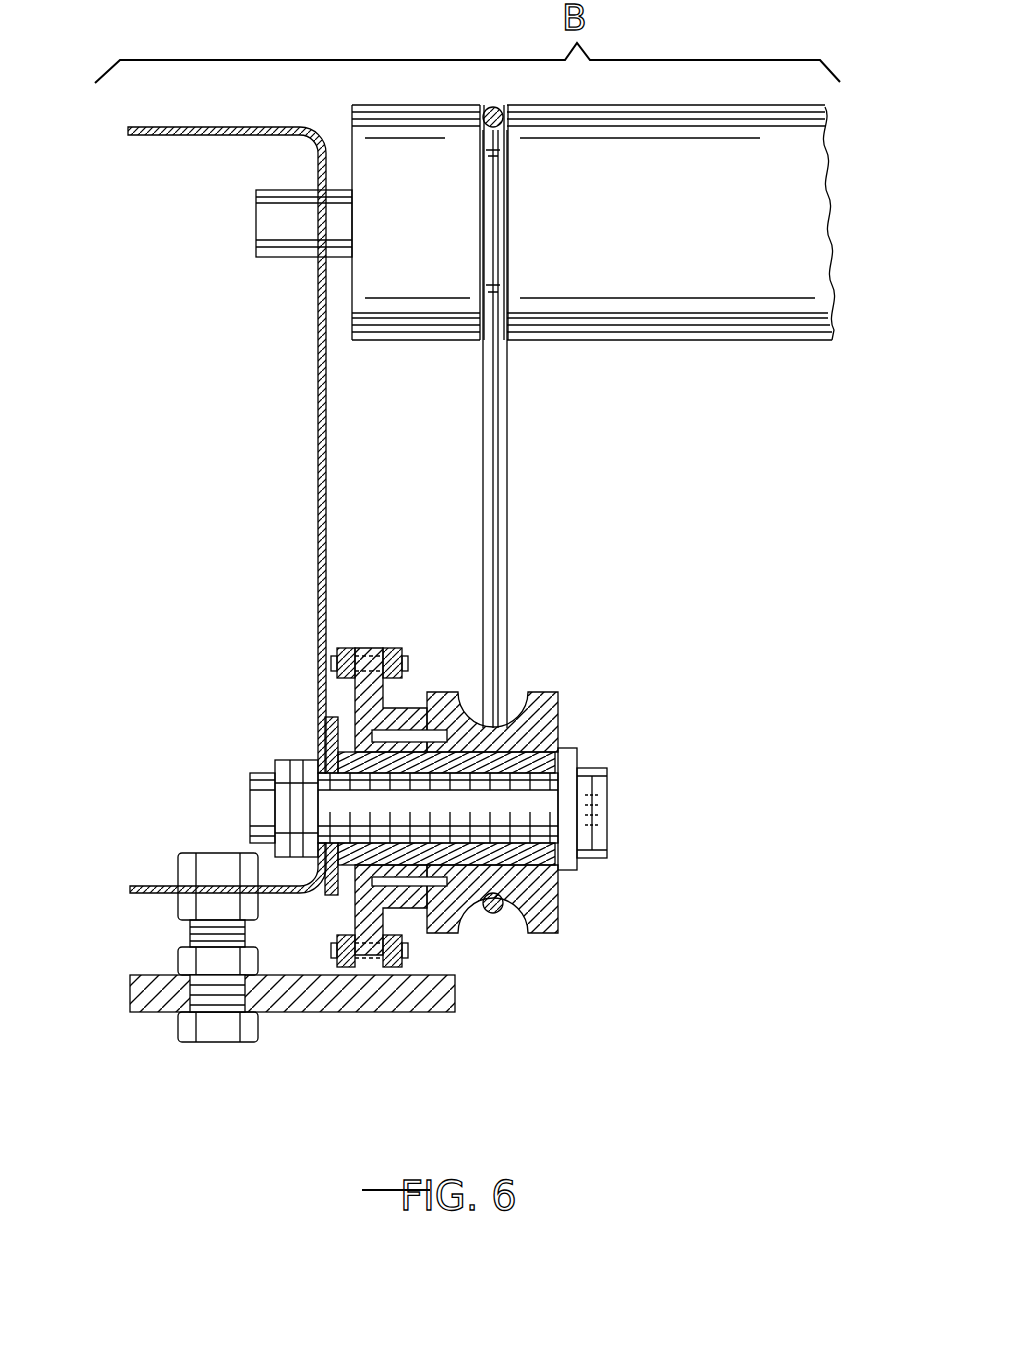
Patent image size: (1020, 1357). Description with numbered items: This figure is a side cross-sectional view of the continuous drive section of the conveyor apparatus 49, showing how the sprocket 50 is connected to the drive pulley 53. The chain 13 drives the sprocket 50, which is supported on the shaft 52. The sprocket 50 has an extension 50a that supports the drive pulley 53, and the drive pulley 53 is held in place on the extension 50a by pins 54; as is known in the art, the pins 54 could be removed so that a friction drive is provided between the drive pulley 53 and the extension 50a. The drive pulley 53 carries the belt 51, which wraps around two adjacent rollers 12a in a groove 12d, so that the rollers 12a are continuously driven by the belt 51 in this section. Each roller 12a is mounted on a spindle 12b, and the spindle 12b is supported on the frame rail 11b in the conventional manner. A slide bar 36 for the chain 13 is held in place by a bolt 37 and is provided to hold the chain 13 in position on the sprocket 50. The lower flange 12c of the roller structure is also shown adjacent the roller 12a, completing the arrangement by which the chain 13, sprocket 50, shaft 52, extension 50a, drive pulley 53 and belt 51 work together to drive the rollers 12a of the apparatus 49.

The frame rail 11b is at (316, 513).
The roller 12a is at (690, 145).
The spindle 12b is at (270, 224).
The rail lower flange 12c is at (725, 343).
The groove 12d is at (495, 170).
The chain 13 is at (393, 650).
The slide bar 36 is at (330, 1013).
The bolt and nuts 37 is at (178, 905).
The conveyor apparatus 49 is at (693, 592).
The sprocket 50 is at (365, 676).
The extension 50a is at (562, 718).
The belt 51 is at (510, 475).
The shaft 52 is at (608, 787).
The drive pulley 53 is at (462, 705).
The pins 54 is at (400, 712).